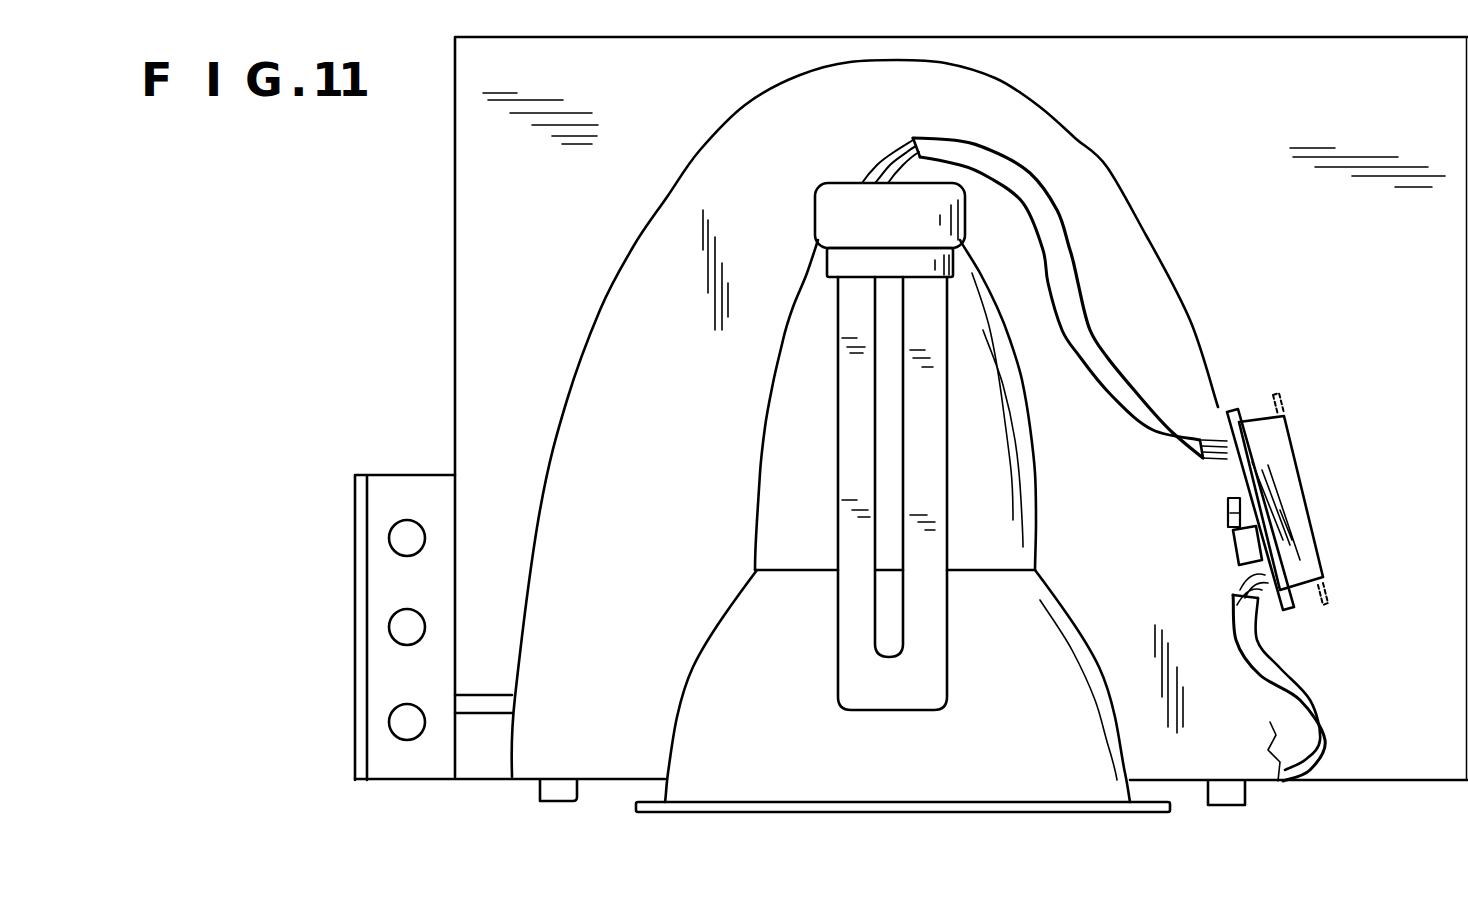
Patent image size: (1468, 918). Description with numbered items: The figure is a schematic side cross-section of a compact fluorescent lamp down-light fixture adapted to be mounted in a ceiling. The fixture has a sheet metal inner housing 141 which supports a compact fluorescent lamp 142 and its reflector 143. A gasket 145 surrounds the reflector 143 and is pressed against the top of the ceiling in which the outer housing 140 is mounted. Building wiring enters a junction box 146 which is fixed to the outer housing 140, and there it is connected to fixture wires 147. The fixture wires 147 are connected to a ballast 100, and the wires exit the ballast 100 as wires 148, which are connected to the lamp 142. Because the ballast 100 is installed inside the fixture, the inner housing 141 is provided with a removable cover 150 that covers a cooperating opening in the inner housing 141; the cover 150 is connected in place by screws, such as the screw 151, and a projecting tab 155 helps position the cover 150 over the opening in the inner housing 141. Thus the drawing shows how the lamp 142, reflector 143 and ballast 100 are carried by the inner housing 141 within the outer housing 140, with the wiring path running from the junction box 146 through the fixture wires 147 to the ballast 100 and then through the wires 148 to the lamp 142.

The ballast 100 is at (1275, 488).
The outer housing 140 is at (1467, 263).
The inner housing 141 is at (1175, 268).
The compact fluorescent lamp 142 is at (838, 433).
The reflector 143 is at (757, 517).
The gasket 145 is at (550, 790).
The junction box 146 is at (408, 497).
The fixture wires 147 is at (483, 713).
The wires 148 is at (1068, 222).
The removable cover 150 is at (1237, 467).
The screw 151 is at (1228, 505).
The projecting tab 155 is at (1233, 548).